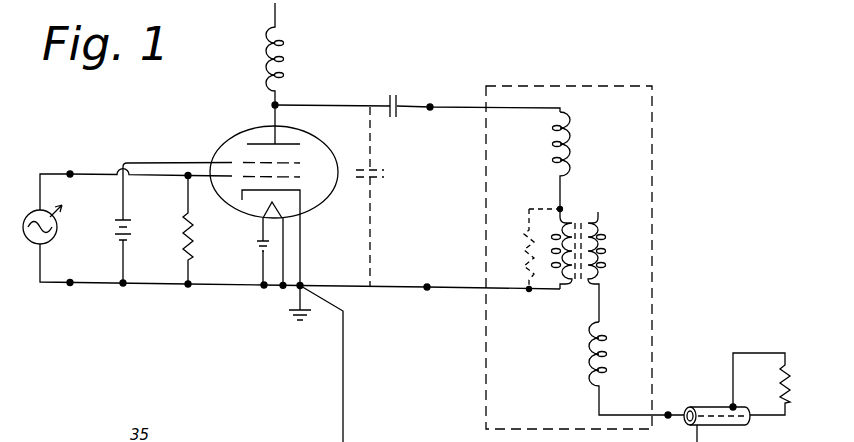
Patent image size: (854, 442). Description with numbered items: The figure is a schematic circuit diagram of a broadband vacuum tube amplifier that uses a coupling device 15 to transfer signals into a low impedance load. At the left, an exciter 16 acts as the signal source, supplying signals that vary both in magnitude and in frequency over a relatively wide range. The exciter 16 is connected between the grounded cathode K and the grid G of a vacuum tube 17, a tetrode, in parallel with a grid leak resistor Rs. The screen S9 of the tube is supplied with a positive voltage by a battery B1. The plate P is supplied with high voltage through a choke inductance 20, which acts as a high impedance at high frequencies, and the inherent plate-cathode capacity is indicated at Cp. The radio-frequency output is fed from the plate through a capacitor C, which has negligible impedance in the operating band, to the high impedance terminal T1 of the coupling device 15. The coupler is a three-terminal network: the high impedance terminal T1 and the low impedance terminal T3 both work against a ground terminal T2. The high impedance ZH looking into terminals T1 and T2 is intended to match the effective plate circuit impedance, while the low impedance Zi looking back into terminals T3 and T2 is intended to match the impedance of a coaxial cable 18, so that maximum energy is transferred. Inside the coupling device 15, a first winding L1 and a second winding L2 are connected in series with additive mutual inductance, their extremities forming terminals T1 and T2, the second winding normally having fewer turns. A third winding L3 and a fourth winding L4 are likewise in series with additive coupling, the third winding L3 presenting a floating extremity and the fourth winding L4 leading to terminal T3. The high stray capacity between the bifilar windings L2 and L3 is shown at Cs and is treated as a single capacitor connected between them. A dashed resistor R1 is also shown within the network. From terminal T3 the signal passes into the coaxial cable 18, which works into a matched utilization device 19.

The coupling device 15 is at (630, 86).
The exciter 16 is at (28, 249).
The vacuum tube 17 is at (233, 121).
The coaxial cable 18 is at (711, 400).
The utilization device 19 is at (782, 386).
The choke inductance 20 is at (294, 63).
The battery B1 is at (131, 220).
The grid leak resistor Rs is at (193, 246).
The capacitor C is at (390, 95).
The high impedance terminal T1 is at (431, 104).
The ground terminal T2 is at (427, 289).
The low impedance terminal T3 is at (668, 413).
The plate-cathode capacity Cp is at (380, 181).
The high impedance ZH is at (427, 190).
The low impedance Zi is at (656, 436).
The screen S9 is at (243, 162).
The plate P is at (300, 144).
The grid G is at (300, 178).
The cathode K is at (244, 200).
The first winding L1 is at (573, 153).
The second winding L2 is at (559, 233).
The third winding L3 is at (604, 243).
The fourth winding L4 is at (602, 356).
The stray capacity Cs is at (588, 226).
The damping resistor R1 is at (525, 236).